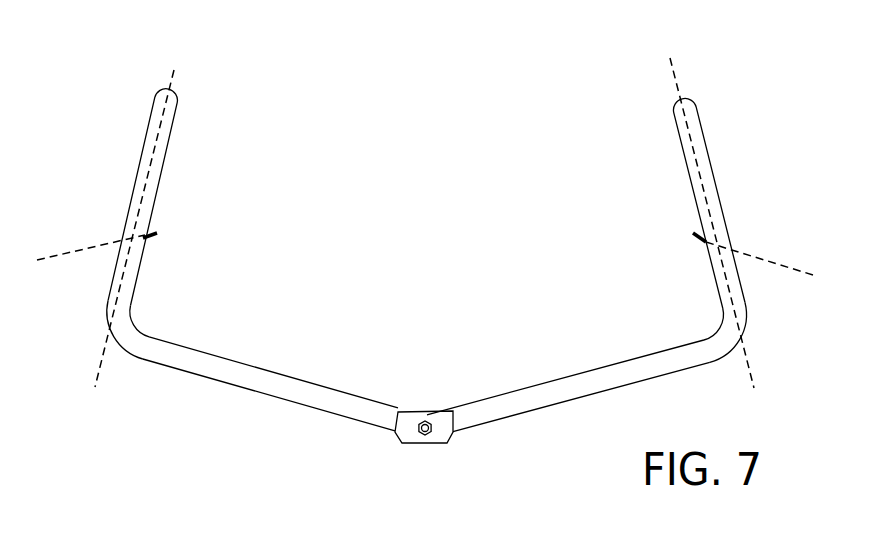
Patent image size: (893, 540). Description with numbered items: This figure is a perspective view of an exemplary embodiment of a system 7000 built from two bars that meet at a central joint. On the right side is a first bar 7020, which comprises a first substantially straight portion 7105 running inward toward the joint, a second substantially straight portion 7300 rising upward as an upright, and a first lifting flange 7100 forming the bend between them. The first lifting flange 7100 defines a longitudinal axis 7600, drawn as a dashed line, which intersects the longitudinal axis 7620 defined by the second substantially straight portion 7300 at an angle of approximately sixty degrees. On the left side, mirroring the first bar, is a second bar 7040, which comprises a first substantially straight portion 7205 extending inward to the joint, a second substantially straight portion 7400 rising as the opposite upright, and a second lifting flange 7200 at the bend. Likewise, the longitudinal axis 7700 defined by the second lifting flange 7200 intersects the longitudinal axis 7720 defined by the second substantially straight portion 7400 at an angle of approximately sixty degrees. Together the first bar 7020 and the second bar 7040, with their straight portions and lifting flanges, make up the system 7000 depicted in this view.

The system 7000 is at (113, 23).
The first bar 7020 is at (620, 226).
The second bar 7040 is at (217, 239).
The first lifting flange 7100 is at (693, 253).
The first substantially straight portion 7105 is at (558, 367).
The second lifting flange 7200 is at (147, 256).
The first substantially straight portion 7205 is at (298, 368).
The second substantially straight portion 7300 is at (676, 165).
The second substantially straight portion 7400 is at (171, 155).
The longitudinal axis 7600 is at (692, 238).
The longitudinal axis 7620 is at (693, 204).
The longitudinal axis 7700 is at (160, 232).
The longitudinal axis 7720 is at (143, 213).